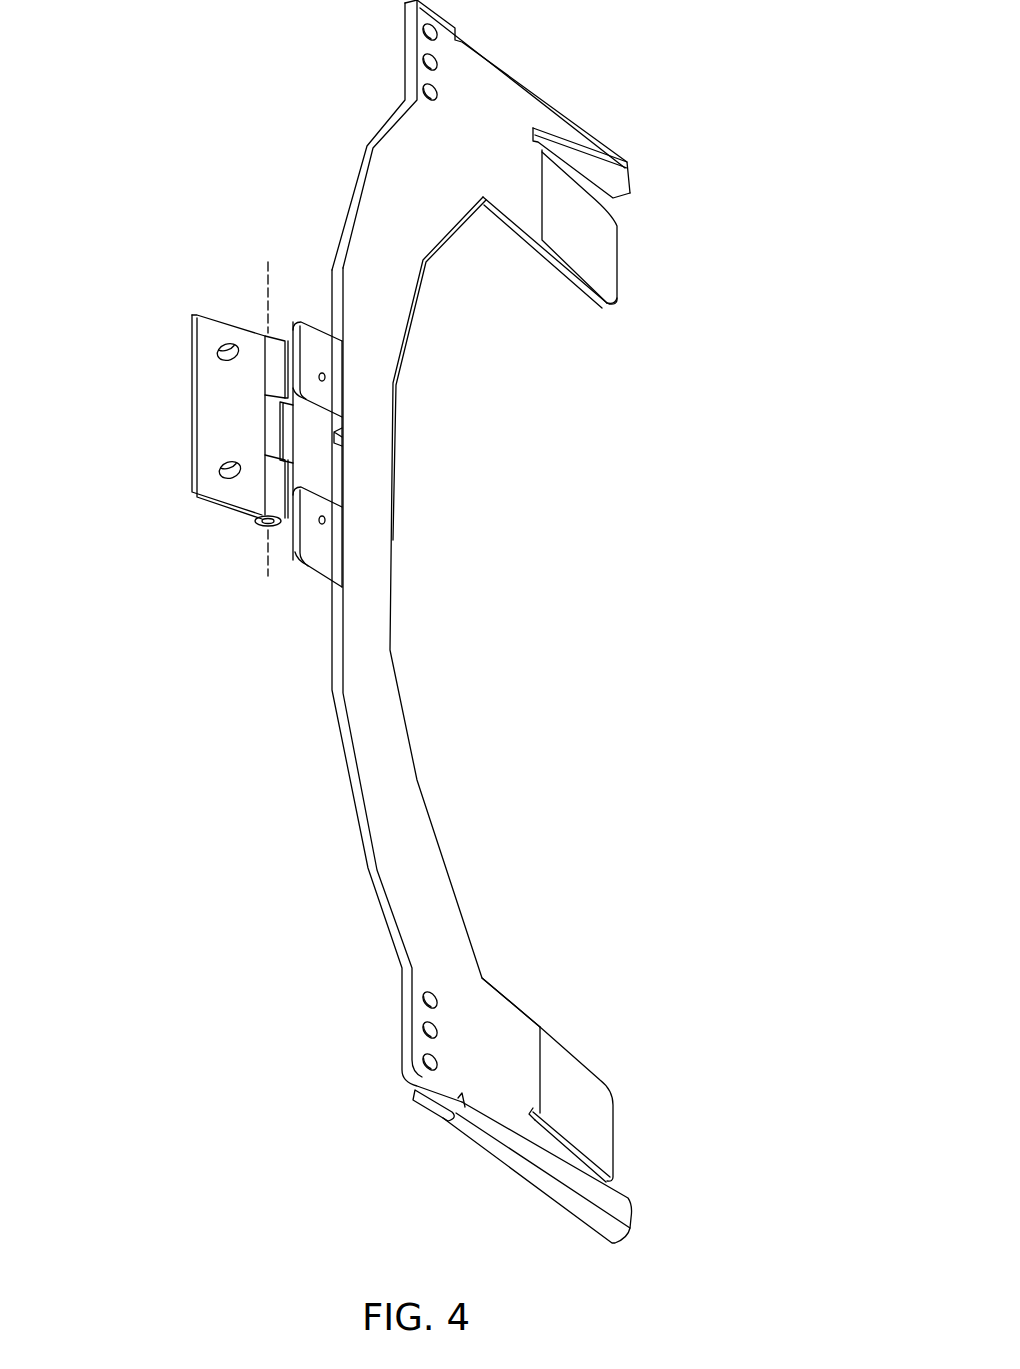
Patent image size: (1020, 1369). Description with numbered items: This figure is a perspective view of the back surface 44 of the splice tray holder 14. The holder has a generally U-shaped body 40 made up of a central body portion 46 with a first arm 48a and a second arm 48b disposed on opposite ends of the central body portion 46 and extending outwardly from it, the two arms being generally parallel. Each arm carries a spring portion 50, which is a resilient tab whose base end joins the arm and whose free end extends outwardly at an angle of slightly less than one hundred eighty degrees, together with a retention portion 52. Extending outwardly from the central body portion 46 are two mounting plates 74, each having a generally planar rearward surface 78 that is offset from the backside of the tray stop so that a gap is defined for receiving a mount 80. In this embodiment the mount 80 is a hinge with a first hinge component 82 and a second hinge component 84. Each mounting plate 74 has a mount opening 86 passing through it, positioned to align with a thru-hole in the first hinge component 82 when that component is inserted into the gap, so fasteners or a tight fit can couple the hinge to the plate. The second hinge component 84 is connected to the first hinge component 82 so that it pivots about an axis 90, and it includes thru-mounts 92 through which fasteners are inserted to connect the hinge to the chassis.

The splice tray holder 14 is at (255, 153).
The body 40 is at (432, 427).
The back surface 44 is at (481, 135).
The central body portion 46 is at (373, 484).
The first arm 48a is at (495, 232).
The second arm 48b is at (513, 983).
The spring portion 50 is at (627, 268).
The retention portion 52 is at (590, 118).
The mounting plate 74 is at (308, 310).
The rearward surface 78 is at (328, 358).
The mount 80 is at (245, 307).
The first hinge component 82 is at (313, 452).
The second hinge component 84 is at (217, 407).
The mount opening 86 is at (323, 520).
The axis 90 is at (267, 555).
The thru-mounts 92 is at (228, 475).